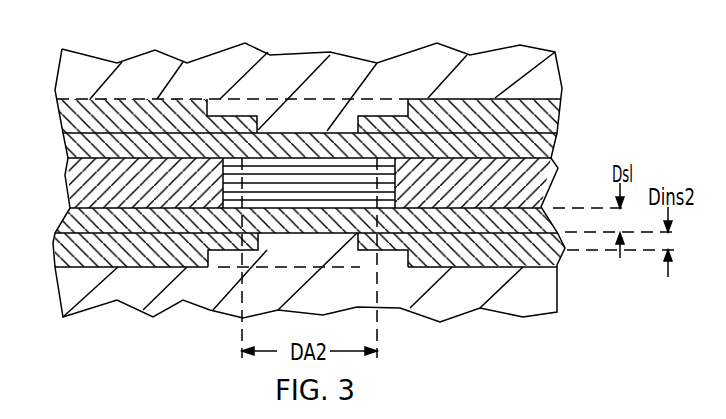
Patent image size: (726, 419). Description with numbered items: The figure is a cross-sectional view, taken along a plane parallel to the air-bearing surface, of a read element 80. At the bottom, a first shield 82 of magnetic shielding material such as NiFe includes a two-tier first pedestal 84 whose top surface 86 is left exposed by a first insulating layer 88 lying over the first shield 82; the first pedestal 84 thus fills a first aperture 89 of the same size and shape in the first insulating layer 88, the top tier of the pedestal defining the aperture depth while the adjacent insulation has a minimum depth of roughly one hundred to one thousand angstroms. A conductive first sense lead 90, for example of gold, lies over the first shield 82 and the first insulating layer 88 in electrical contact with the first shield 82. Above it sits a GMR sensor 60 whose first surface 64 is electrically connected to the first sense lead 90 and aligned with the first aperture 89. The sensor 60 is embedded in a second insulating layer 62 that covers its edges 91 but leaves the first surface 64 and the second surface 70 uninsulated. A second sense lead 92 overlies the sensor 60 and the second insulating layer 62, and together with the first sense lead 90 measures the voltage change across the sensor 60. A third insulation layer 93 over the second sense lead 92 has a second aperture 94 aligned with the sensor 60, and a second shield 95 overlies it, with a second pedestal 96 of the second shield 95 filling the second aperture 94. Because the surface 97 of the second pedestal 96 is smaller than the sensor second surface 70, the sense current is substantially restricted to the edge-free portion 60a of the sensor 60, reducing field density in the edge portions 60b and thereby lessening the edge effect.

The read element 80 is at (572, 38).
The first shield 82 is at (522, 305).
The first pedestal 84 is at (220, 258).
The top surface 86 is at (277, 231).
The first insulating layer 88 is at (540, 253).
The first aperture 89 is at (378, 268).
The first sense lead 90 is at (85, 221).
The edges 91 is at (222, 190).
The second sense lead 92 is at (545, 143).
The third insulation layer 93 is at (538, 118).
The second aperture 94 is at (377, 95).
The second shield 95 is at (143, 62).
The second pedestal 96 is at (312, 107).
The surface 97 is at (289, 137).
The second surface 70 is at (381, 152).
The second insulating layer 62 is at (70, 177).
The sensor 60 is at (395, 168).
The edge-free portion 60a is at (297, 193).
The edge portions 60b is at (222, 170).
The first surface 64 is at (380, 264).